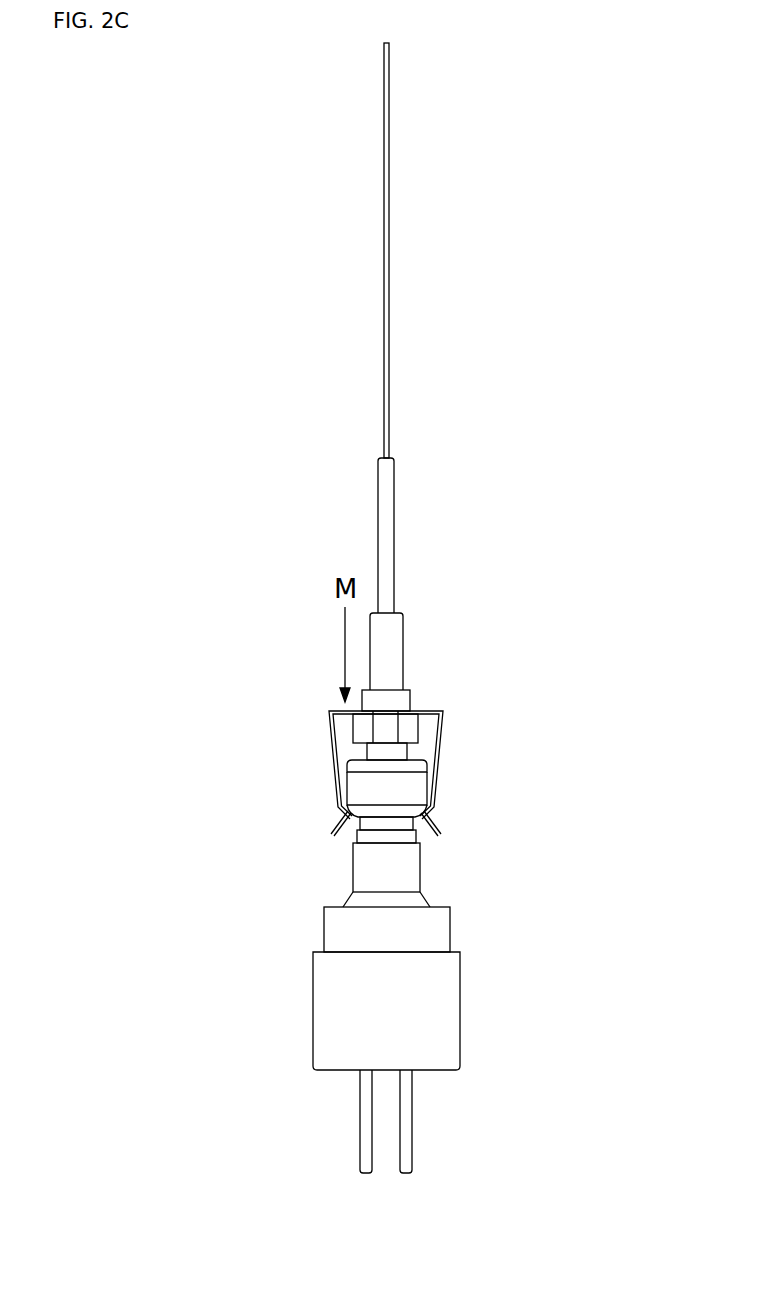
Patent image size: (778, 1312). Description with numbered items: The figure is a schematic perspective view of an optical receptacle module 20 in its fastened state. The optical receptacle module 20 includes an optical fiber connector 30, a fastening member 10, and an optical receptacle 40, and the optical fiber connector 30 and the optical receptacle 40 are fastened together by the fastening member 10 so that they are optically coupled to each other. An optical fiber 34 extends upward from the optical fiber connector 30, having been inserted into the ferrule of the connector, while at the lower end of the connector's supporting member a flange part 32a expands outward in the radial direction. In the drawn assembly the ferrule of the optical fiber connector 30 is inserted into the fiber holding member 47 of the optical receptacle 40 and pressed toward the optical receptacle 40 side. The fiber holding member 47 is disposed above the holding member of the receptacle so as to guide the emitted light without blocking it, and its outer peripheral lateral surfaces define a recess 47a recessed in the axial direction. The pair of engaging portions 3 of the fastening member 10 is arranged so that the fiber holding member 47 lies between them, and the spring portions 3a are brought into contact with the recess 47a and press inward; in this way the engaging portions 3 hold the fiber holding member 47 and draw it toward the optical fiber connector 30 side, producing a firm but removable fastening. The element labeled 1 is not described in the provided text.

The optical fiber 34 is at (389, 233).
The optical fiber connector 30 is at (452, 638).
The optical element 1 is at (423, 711).
The flange part 32a is at (362, 725).
The fiber holding member 47 is at (362, 787).
The engaging portions 3 is at (335, 752).
The spring portions 3a is at (432, 808).
The fastening member 10 is at (412, 752).
The recess 47a is at (347, 848).
The optical receptacle 40 is at (491, 973).
The optical receptacle module 20 is at (651, 547).